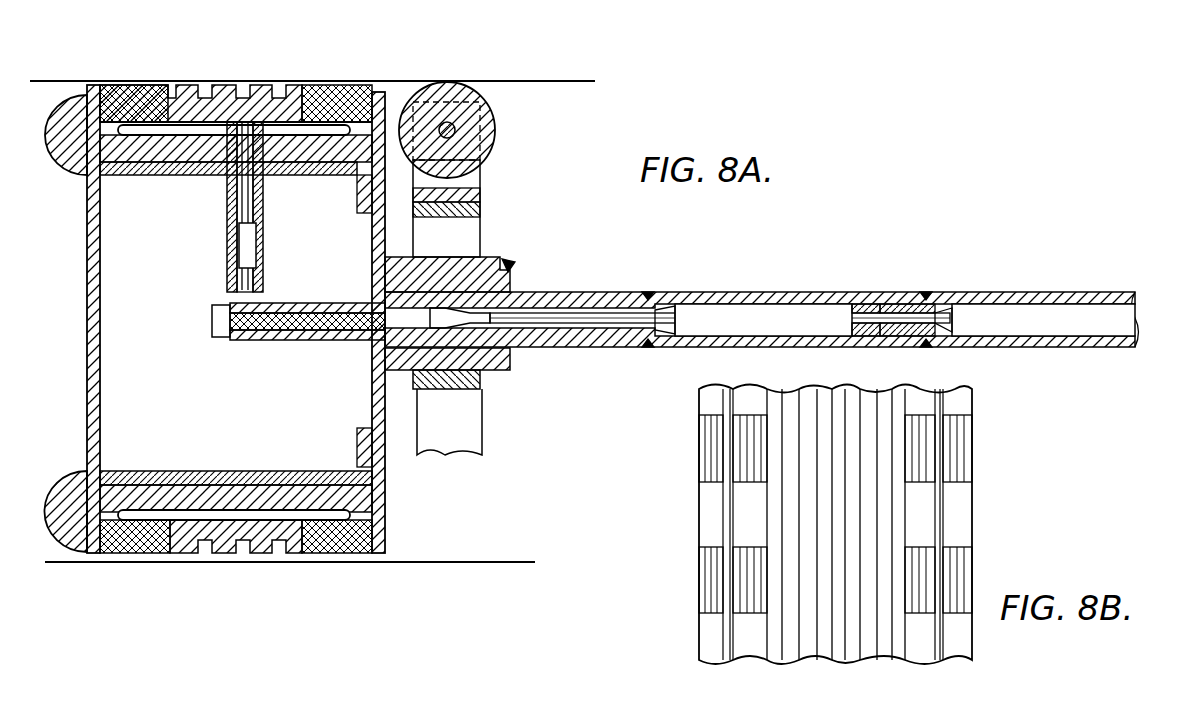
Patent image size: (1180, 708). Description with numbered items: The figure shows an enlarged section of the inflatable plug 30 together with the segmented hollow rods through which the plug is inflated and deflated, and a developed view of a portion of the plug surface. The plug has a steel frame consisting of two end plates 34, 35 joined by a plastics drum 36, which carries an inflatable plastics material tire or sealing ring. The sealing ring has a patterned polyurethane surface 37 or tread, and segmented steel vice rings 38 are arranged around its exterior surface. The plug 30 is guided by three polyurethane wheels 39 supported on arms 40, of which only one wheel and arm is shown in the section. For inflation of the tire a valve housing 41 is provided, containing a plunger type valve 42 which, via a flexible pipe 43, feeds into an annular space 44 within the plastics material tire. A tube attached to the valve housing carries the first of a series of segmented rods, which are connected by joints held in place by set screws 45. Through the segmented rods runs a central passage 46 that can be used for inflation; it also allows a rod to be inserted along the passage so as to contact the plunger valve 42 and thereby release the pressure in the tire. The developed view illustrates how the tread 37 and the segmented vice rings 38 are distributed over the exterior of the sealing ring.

In FIG. 8A, the inflatable plug 30 is at (185, 387).
In FIG. 8A, the end plate 34 is at (100, 395).
In FIG. 8A, the end plate 35 is at (372, 383).
In FIG. 8A, the plastics drum 36 is at (275, 478).
In FIG. 8A, the patterned polyurethane surface 37 is at (255, 555).
In FIG. 8B, the patterned polyurethane surface 37 is at (825, 628).
In FIG. 8A, the segmented steel vice rings 38 is at (128, 550).
In FIG. 8B, the segmented steel vice rings 38 is at (705, 450).
In FIG. 8A, the polyurethane wheels 39 is at (495, 125).
In FIG. 8A, the arms 40 is at (472, 236).
In FIG. 8A, the valve housing 41 is at (512, 268).
In FIG. 8A, the plunger type valve 42 is at (446, 330).
In FIG. 8A, the flexible pipe 43 is at (228, 238).
In FIG. 8A, the annular space 44 is at (237, 128).
In FIG. 8A, the set screws 45 is at (885, 298).
In FIG. 8A, the central passage 46 is at (995, 306).